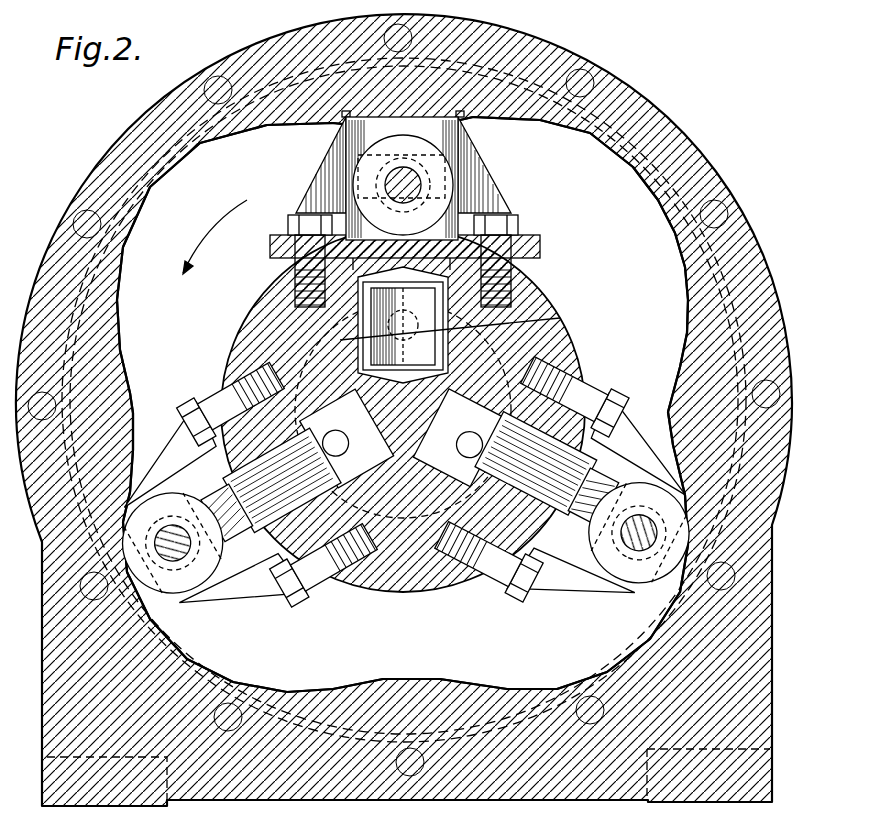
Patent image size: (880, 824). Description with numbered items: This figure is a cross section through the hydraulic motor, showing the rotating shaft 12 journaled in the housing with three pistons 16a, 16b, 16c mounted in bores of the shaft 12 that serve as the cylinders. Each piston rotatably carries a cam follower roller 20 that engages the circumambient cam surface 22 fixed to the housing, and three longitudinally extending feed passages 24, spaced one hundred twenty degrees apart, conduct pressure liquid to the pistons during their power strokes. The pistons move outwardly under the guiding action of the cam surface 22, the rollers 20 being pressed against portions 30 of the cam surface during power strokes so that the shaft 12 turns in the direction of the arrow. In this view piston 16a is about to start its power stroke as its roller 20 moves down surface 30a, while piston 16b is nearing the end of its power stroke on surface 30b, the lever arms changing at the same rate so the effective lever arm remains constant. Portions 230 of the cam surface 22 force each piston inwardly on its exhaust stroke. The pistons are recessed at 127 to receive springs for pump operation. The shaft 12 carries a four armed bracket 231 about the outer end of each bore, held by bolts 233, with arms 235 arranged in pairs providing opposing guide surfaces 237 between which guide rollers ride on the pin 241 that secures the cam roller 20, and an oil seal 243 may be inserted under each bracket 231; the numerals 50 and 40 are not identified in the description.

The rotating shaft 12 is at (408, 580).
The piston 16a is at (395, 307).
The piston 16b is at (350, 451).
The piston 16c is at (455, 442).
The cam follower roller 20 is at (428, 150).
The cam surface 22 is at (405, 678).
The feed passage 24 is at (339, 431).
The cam surface portion 30 is at (250, 123).
The cam surface 30a is at (332, 125).
The cam surface 30b is at (128, 455).
The recess 127 is at (560, 318).
The cam surface portion 230 is at (123, 333).
The four armed bracket 231 is at (519, 243).
The bolt 233 is at (493, 227).
The bracket arm 235 is at (322, 174).
The guide surface 237 is at (447, 130).
The pin 241 is at (422, 178).
The oil seal 243 is at (455, 287).
The base 50 is at (172, 806).
The base plate 40 is at (262, 801).